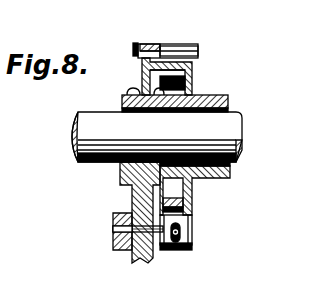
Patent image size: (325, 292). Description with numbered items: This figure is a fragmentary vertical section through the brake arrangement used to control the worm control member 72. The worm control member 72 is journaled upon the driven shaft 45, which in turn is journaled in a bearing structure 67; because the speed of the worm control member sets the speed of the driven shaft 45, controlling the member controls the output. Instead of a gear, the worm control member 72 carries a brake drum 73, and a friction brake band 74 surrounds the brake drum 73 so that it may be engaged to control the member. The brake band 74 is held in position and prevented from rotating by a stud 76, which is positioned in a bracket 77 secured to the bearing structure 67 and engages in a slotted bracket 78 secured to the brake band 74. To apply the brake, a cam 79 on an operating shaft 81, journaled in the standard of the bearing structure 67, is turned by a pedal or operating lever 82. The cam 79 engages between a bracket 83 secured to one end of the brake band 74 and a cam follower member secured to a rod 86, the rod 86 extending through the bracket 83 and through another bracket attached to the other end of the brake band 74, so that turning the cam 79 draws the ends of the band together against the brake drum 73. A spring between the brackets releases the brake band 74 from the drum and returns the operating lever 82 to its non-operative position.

The driven shaft 45 is at (225, 140).
The bearing structure 67 is at (122, 176).
The worm control member 72 is at (197, 101).
The brake drum 73 is at (193, 86).
The friction brake band 74 is at (191, 207).
The stud 76 is at (196, 46).
The bracket 77 is at (134, 56).
The slotted bracket 78 is at (176, 44).
The cam 79 is at (192, 246).
The operating shaft 81 is at (113, 230).
The operating lever 82 is at (121, 250).
The bracket 83 is at (181, 250).
The rod 86 is at (182, 231).